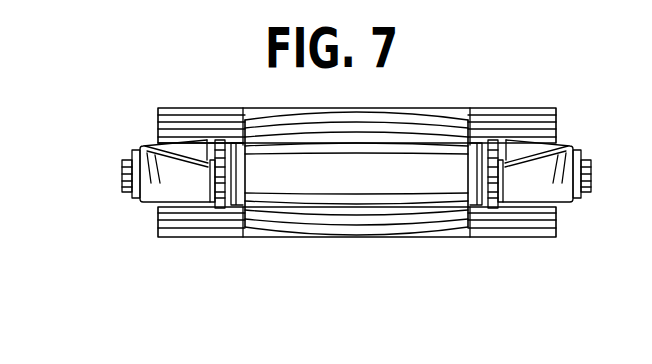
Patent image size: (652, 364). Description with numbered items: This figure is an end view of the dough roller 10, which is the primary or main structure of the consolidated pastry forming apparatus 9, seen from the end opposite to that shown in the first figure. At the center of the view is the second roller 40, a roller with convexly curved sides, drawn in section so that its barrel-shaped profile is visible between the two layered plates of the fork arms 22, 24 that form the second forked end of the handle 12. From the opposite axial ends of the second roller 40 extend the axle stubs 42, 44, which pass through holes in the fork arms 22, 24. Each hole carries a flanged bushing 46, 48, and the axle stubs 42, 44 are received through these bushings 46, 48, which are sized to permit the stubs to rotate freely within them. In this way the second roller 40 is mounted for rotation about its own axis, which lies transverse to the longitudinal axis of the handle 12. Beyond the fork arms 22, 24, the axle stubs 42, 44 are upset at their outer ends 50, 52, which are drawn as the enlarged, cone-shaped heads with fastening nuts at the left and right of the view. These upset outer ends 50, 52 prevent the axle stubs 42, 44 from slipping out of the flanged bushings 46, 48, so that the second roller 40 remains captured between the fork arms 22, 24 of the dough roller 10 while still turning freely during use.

The consolidated pastry forming apparatus 9 is at (320, 243).
The dough roller 10 is at (438, 78).
The handle 12 is at (195, 197).
The fork arm 22 is at (486, 145).
The fork arm 24 is at (230, 140).
The second roller 40 is at (373, 172).
The axle stub 42 is at (471, 205).
The axle stub 44 is at (231, 205).
The flanged bushing 46 is at (502, 200).
The flanged bushing 48 is at (200, 133).
The outer end 50 is at (508, 178).
The outer end 52 is at (210, 168).